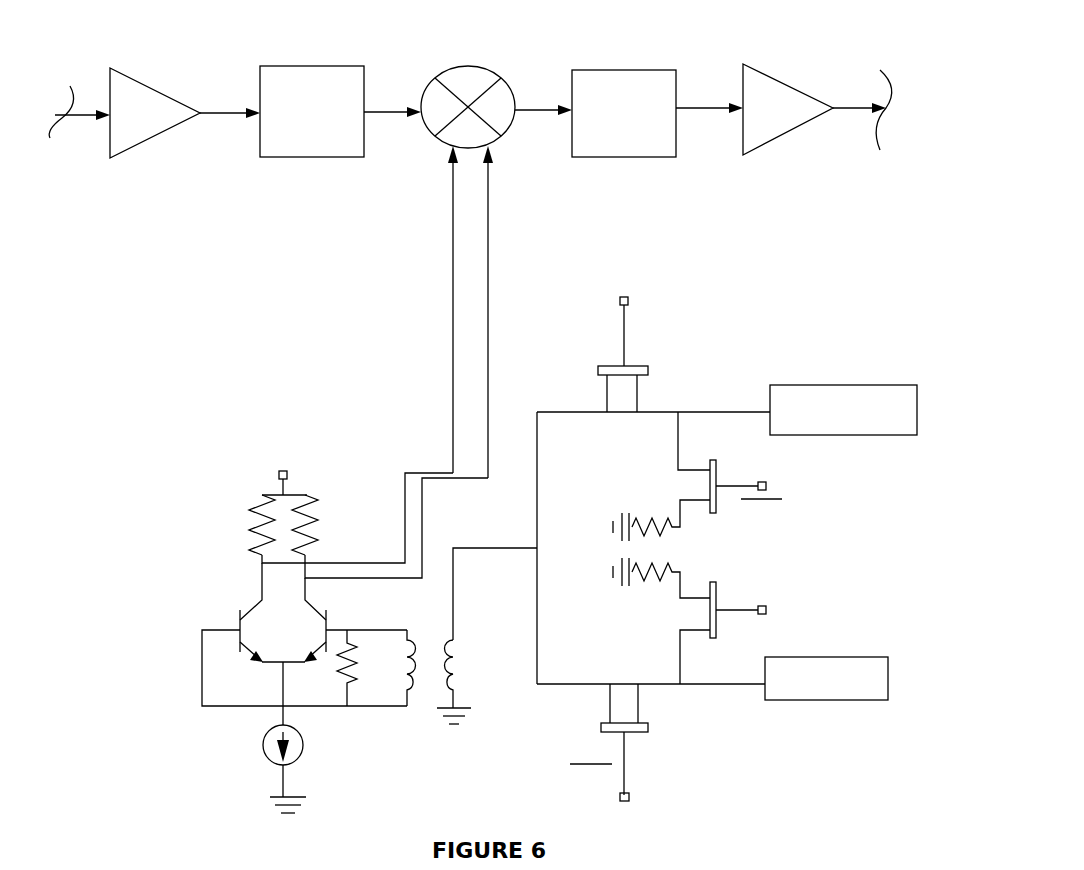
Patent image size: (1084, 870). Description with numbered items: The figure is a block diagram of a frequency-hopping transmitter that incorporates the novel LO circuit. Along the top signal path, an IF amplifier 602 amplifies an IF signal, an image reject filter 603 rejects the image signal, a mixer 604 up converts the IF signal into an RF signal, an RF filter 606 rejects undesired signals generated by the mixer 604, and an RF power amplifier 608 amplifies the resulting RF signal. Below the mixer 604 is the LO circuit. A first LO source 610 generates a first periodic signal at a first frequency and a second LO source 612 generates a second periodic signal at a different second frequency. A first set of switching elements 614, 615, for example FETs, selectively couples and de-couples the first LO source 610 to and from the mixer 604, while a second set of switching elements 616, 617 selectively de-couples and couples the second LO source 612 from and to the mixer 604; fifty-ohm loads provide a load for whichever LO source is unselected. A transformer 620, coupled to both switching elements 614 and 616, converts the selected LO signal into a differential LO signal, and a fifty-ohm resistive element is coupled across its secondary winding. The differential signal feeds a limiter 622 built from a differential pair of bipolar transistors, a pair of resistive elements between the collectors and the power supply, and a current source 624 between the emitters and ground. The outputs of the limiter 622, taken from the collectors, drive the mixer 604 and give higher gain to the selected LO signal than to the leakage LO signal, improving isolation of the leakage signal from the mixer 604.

The IF amplifier 602 is at (130, 78).
The image reject filter 603 is at (298, 64).
The mixer 604 is at (460, 62).
The RF filter 606 is at (625, 70).
The RF power amplifier 608 is at (775, 80).
The first LO source 610 is at (822, 655).
The second LO source 612 is at (800, 385).
The switching element 614 is at (650, 735).
The switching element 615 is at (716, 585).
The switching element 616 is at (650, 370).
The switching element 617 is at (716, 462).
The transformer 620 is at (455, 665).
The limiter 622 is at (194, 486).
The current source 624 is at (303, 745).